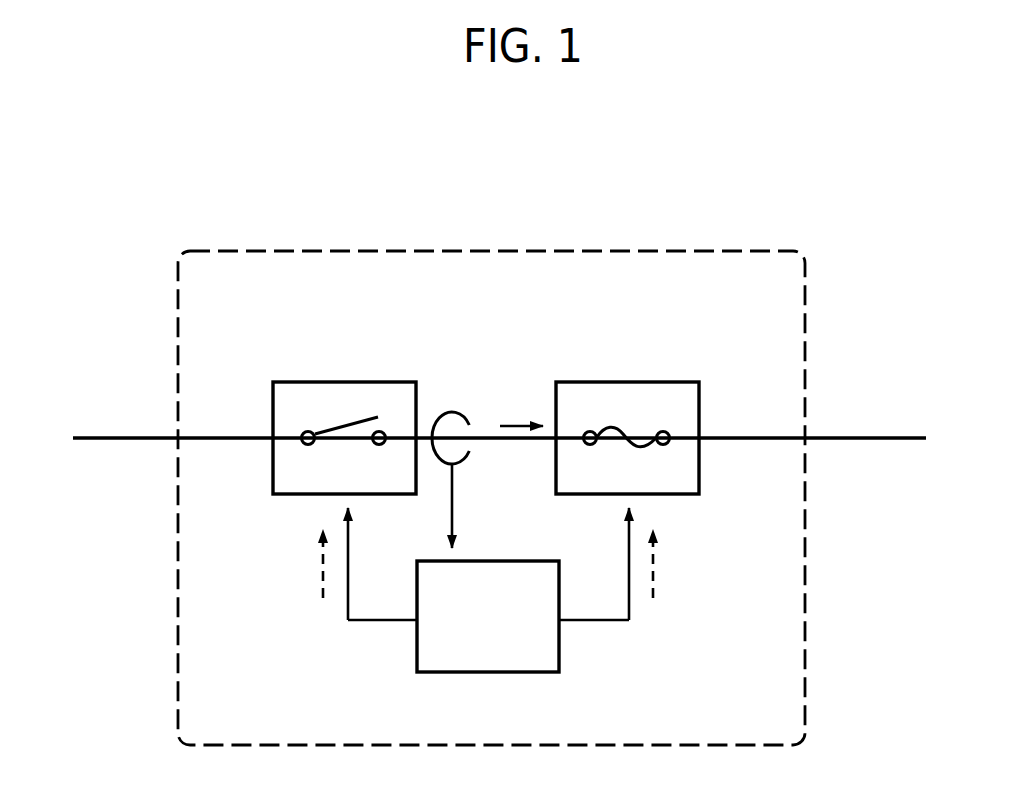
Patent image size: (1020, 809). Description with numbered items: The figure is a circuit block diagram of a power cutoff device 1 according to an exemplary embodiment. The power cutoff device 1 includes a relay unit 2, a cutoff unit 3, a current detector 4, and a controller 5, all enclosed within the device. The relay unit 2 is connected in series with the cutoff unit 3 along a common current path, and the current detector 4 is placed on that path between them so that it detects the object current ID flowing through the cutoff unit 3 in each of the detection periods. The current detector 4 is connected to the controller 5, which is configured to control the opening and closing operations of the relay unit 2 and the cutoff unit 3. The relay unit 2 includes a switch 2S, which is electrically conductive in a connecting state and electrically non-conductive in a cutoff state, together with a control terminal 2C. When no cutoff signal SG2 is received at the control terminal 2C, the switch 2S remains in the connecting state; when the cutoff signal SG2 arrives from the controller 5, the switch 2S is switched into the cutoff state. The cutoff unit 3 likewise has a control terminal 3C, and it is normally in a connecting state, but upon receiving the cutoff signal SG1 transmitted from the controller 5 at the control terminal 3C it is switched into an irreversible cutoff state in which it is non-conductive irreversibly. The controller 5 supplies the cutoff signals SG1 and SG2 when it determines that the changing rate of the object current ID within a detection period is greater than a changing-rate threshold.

The power cutoff device 1 is at (773, 250).
The relay unit 2 is at (297, 382).
The switch 2S is at (334, 427).
The control terminal 2C is at (353, 497).
The cutoff unit 3 is at (620, 382).
The control terminal 3C is at (628, 495).
The current detector 4 is at (452, 412).
The controller 5 is at (560, 638).
The object current ID is at (521, 407).
The cutoff signal SG1 is at (684, 564).
The cutoff signal SG2 is at (291, 564).